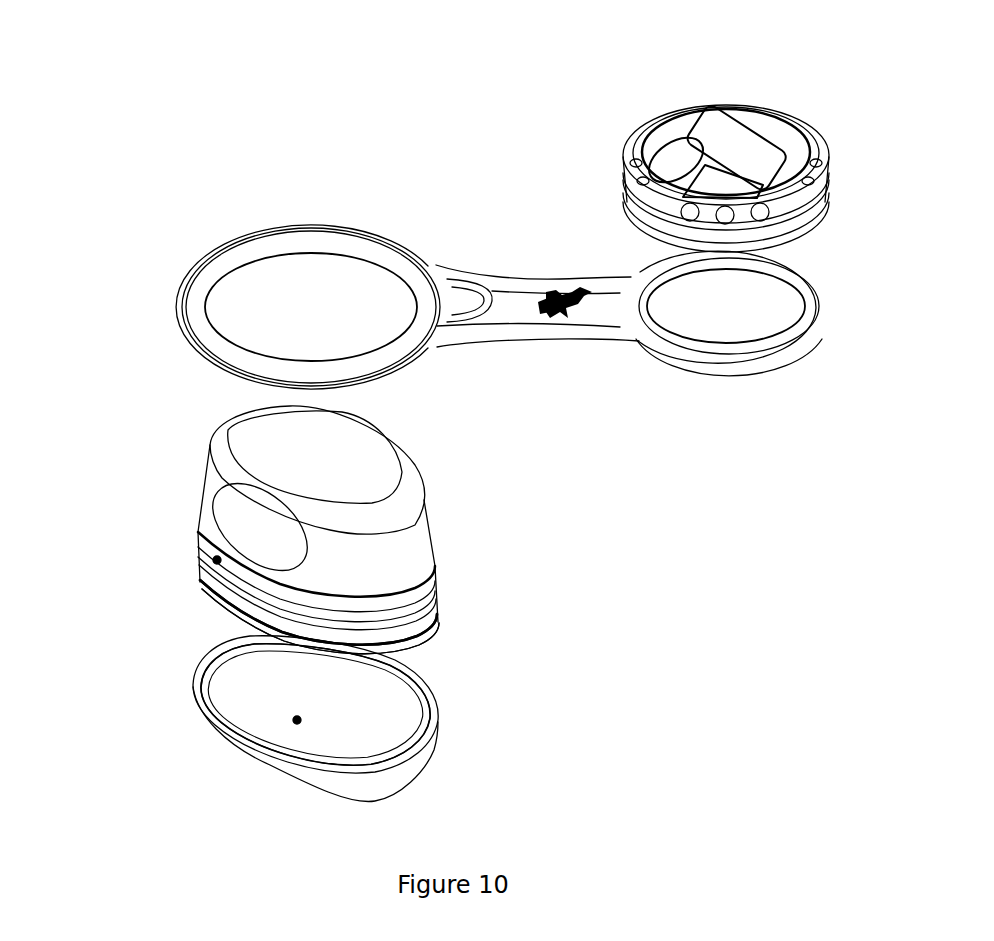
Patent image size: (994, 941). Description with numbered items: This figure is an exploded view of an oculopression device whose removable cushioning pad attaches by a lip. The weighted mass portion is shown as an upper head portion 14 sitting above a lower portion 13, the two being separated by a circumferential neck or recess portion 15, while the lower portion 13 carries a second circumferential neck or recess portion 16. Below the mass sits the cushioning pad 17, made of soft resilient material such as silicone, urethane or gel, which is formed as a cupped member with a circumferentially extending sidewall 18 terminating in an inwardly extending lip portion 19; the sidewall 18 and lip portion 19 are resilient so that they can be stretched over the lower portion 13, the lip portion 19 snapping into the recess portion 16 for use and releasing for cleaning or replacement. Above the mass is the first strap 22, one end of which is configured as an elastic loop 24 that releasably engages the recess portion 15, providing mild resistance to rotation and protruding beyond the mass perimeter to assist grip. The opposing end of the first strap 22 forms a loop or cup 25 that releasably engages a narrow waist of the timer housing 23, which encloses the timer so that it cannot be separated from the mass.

The lower portion 13 is at (200, 577).
The upper head portion 14 is at (215, 430).
The circumferential neck or recess portion 15 is at (215, 558).
The second circumferential neck or recess portion 16 is at (213, 603).
The cushioning pad 17 is at (295, 722).
The sidewall 18 is at (445, 717).
The lip portion 19 is at (415, 683).
The first strap 22 is at (523, 278).
The housing 23 is at (630, 140).
The loop 24 is at (252, 232).
The loop or cup 25 is at (786, 366).